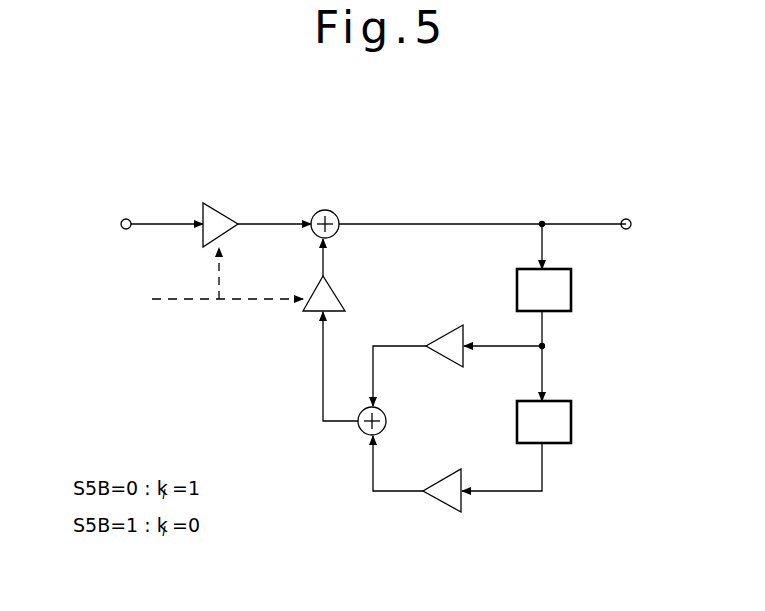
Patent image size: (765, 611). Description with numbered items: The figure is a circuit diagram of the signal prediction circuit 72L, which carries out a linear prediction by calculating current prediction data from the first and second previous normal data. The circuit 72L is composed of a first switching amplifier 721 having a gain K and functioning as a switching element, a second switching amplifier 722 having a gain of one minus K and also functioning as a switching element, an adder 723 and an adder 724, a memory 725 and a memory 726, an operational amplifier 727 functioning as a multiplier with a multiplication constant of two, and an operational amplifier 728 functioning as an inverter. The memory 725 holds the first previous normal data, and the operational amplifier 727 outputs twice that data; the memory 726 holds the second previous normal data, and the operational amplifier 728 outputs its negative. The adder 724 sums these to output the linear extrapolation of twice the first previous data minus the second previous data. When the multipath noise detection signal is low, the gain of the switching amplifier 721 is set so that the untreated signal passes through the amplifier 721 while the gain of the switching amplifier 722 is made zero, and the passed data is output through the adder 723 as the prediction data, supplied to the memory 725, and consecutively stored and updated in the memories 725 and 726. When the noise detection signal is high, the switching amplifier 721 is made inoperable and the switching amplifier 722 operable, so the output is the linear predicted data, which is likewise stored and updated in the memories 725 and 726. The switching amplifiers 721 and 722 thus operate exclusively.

The signal prediction circuit 72L is at (443, 159).
The first switching amplifier 721 is at (204, 202).
The second switching amplifier 722 is at (305, 313).
The adder 723 is at (330, 211).
The adder 724 is at (387, 416).
The memory 725 is at (573, 292).
The memory 726 is at (573, 420).
The operational amplifier 727 is at (443, 326).
The operational amplifier 728 is at (450, 471).